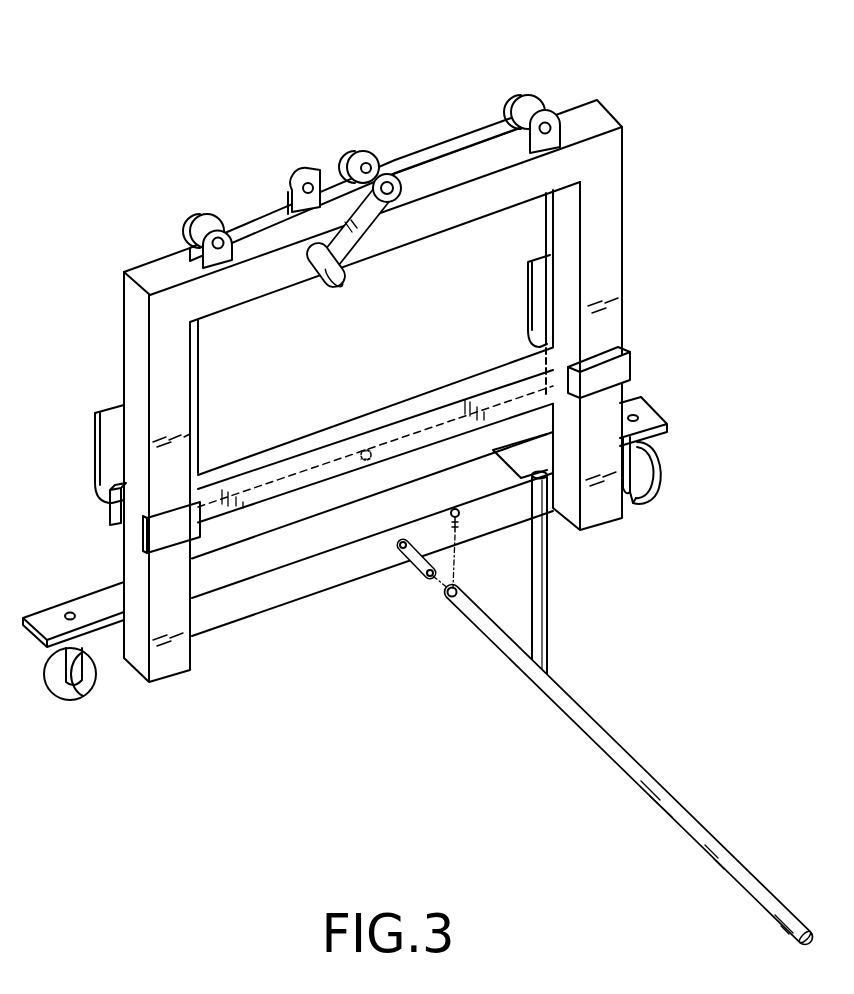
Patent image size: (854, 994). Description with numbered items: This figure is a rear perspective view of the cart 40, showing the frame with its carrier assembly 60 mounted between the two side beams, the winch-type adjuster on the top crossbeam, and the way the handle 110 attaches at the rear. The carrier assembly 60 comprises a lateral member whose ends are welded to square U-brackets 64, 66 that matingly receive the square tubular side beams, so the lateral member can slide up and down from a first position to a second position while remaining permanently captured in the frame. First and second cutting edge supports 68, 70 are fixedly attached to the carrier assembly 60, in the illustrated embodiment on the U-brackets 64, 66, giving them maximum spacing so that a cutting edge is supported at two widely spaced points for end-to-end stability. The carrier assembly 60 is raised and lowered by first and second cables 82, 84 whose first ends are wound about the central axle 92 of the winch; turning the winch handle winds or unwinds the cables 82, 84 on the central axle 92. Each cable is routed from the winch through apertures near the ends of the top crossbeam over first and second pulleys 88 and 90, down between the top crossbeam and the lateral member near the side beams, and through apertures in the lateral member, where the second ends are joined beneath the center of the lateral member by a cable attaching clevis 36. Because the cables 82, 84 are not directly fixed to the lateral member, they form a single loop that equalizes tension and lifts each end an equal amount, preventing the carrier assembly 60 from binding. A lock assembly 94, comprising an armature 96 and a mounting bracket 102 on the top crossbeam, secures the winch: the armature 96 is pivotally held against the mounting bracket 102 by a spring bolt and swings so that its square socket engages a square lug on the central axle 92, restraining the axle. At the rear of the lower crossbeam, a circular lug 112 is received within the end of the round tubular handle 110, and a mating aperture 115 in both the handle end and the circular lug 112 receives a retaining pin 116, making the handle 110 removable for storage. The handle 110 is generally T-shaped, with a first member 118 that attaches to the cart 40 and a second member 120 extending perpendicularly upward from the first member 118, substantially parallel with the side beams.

The cable attaching clevis 36 is at (369, 447).
The cart 40 is at (680, 160).
The carrier assembly 60 is at (283, 455).
The U-bracket 64 is at (110, 513).
The U-bracket 66 is at (624, 367).
The first cutting edge support 68 is at (95, 441).
The second cutting edge support 70 is at (528, 296).
The first cable 82 is at (468, 130).
The second cable 84 is at (244, 212).
The first pulley 88 is at (193, 227).
The second pulley 90 is at (530, 95).
The central axle 92 is at (378, 168).
The lock assembly 94 is at (340, 163).
The armature 96 is at (328, 170).
The mounting bracket 102 is at (302, 180).
The handle 110 is at (593, 741).
The circular lug 112 is at (428, 542).
The mating aperture 115 is at (445, 593).
The retaining pin 116 is at (458, 520).
The first member 118 is at (592, 722).
The second member 120 is at (548, 622).